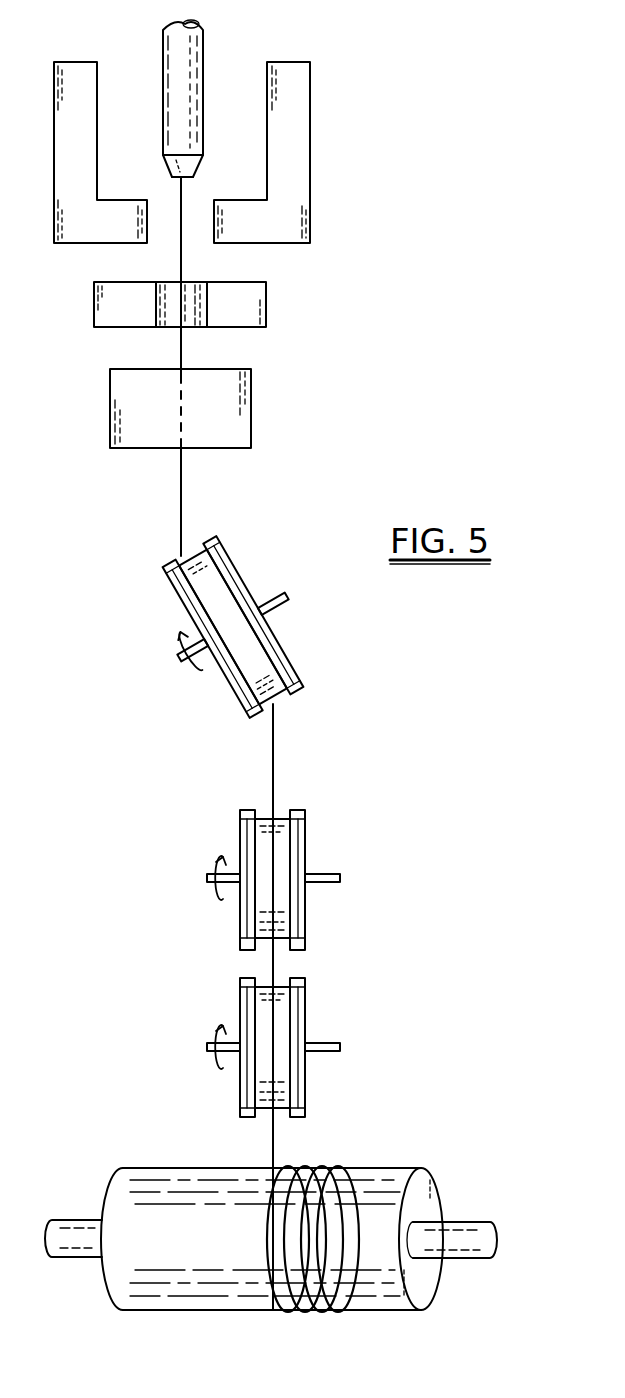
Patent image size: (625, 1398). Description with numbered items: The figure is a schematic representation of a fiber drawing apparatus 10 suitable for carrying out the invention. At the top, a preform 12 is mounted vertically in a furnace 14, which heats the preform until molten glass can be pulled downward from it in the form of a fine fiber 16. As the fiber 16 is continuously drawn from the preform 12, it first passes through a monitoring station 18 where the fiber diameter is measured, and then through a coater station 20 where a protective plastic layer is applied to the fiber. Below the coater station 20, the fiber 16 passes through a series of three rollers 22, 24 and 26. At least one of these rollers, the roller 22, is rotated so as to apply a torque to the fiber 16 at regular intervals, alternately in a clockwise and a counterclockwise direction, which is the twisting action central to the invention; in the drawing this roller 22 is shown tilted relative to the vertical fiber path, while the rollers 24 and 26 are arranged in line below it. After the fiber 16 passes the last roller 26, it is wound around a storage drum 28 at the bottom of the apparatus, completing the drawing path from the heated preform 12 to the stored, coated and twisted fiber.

The fiber drawing apparatus 10 is at (360, 113).
The preform 12 is at (163, 45).
The furnace 14 is at (310, 195).
The fiber 16 is at (183, 245).
The monitoring station 18 is at (266, 310).
The coater station 20 is at (251, 408).
The roller 22 is at (228, 550).
The roller 24 is at (305, 825).
The roller 26 is at (305, 992).
The storage drum 28 is at (440, 1203).